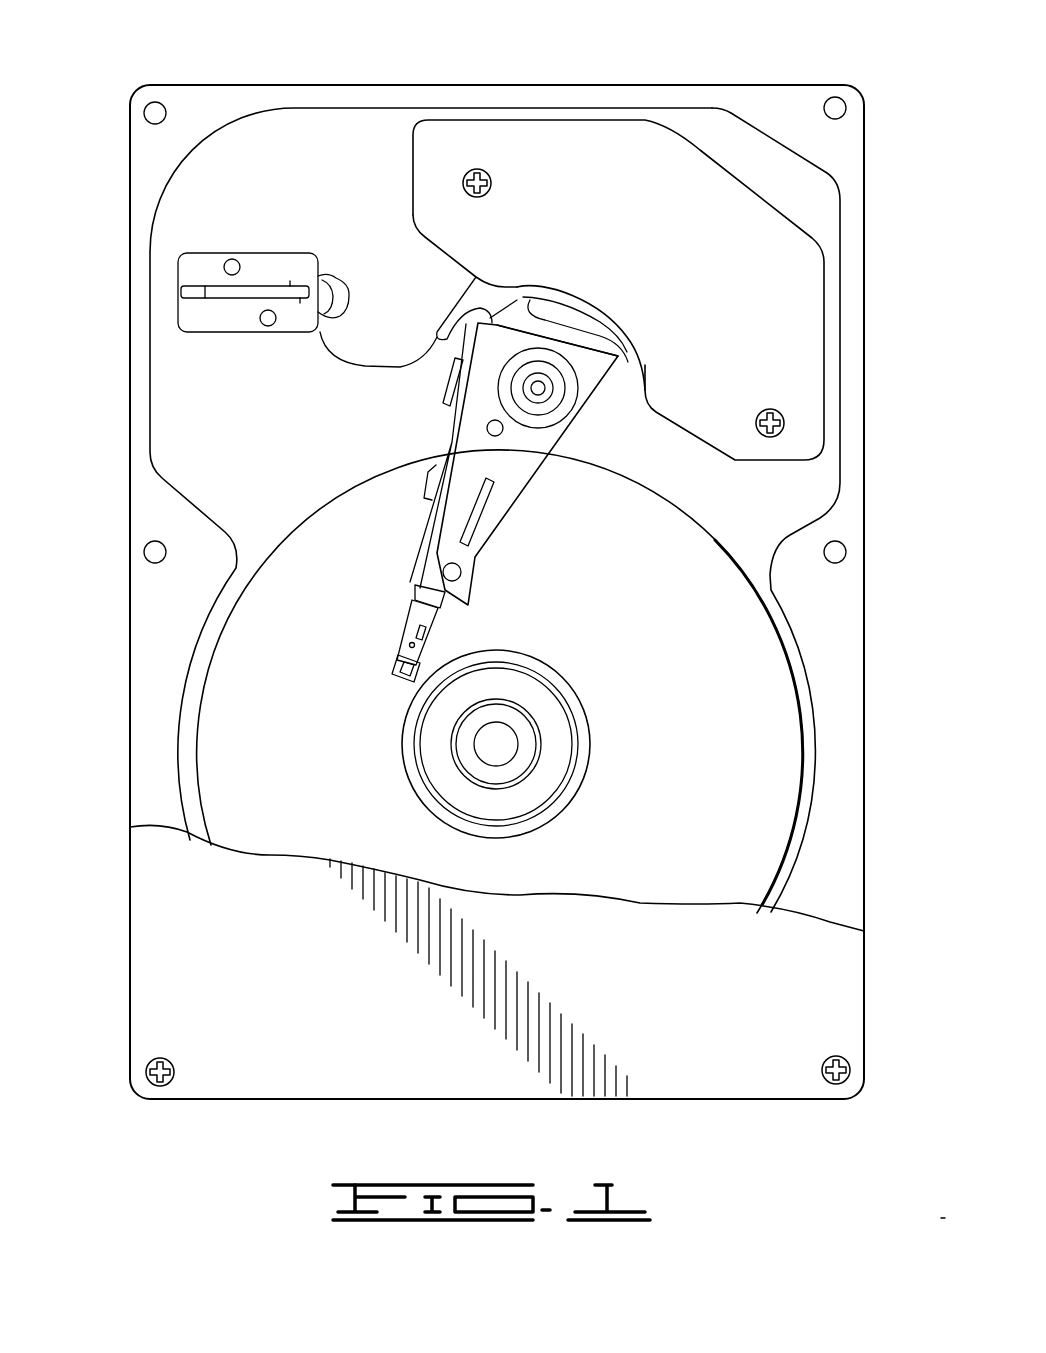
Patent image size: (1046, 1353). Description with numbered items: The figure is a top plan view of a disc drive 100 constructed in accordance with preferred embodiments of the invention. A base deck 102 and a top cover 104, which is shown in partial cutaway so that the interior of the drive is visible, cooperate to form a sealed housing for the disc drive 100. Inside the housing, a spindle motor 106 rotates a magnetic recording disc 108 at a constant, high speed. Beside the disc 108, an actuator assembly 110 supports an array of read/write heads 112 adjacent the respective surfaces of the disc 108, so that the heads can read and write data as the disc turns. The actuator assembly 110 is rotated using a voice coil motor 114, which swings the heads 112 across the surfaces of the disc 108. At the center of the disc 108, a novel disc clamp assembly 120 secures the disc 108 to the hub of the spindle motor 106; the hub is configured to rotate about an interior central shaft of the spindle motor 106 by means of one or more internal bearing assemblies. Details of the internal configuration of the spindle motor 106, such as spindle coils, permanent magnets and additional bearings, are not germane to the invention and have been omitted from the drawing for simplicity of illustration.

The disc drive 100 is at (232, 44).
The base deck 102 is at (183, 412).
The top cover 104 is at (183, 903).
The spindle motor 106 is at (503, 742).
The magnetic recording disc 108 is at (780, 752).
The actuator assembly 110 is at (498, 467).
The read/write heads 112 is at (398, 660).
The voice coil motor 114 is at (762, 163).
The disc clamp assembly 120 is at (523, 693).